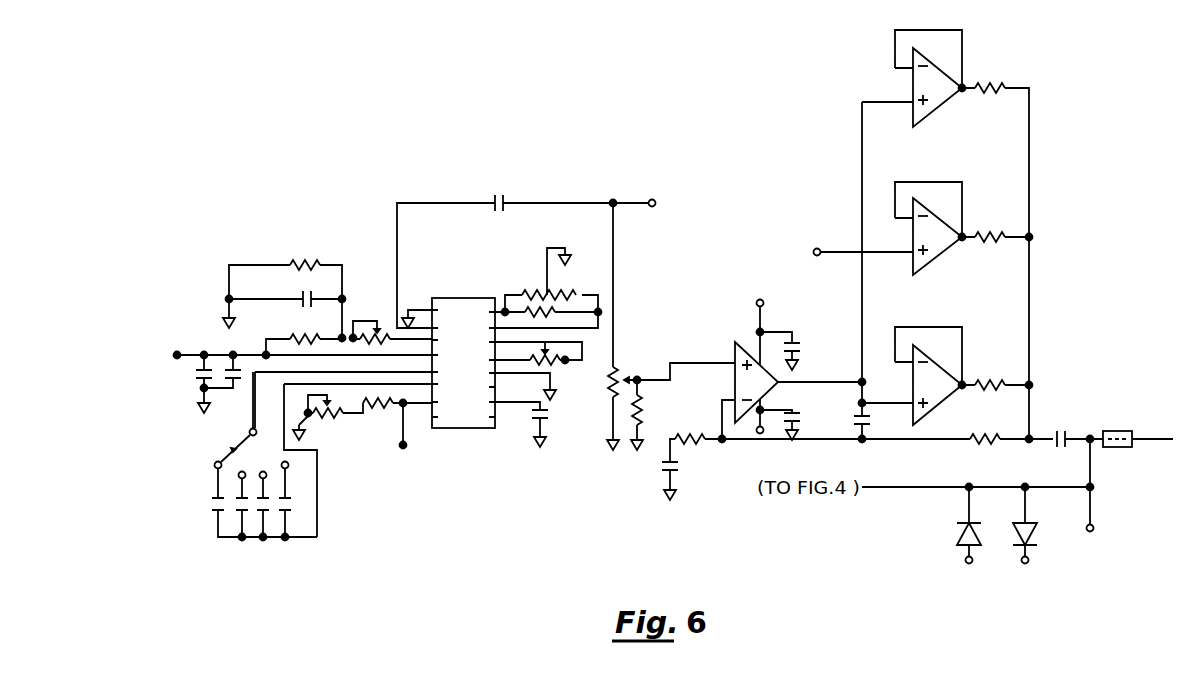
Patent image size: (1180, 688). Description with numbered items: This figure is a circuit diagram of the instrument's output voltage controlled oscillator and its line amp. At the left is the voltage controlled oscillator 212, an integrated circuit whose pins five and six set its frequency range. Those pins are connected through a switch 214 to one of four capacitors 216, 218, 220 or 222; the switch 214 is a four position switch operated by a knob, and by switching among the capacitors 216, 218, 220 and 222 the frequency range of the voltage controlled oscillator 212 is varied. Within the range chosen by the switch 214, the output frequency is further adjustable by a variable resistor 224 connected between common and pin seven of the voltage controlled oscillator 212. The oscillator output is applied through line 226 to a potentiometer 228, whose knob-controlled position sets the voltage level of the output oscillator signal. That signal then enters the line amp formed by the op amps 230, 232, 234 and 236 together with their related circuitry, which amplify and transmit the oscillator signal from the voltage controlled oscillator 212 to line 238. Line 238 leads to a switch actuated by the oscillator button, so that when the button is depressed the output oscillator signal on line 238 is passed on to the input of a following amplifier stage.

The voltage controlled oscillator 212 is at (455, 430).
The switch 214 is at (240, 446).
The capacitor 216 is at (215, 512).
The capacitor 218 is at (242, 512).
The capacitor 220 is at (263, 512).
The capacitor 222 is at (290, 511).
The variable resistor 224 is at (329, 421).
The line 226 is at (532, 197).
The potentiometer 228 is at (613, 370).
The op amp 230 is at (776, 388).
The op amp 232 is at (945, 393).
The operational amplifier 234 is at (943, 254).
The op amp 236 is at (943, 103).
The line 238 is at (908, 487).